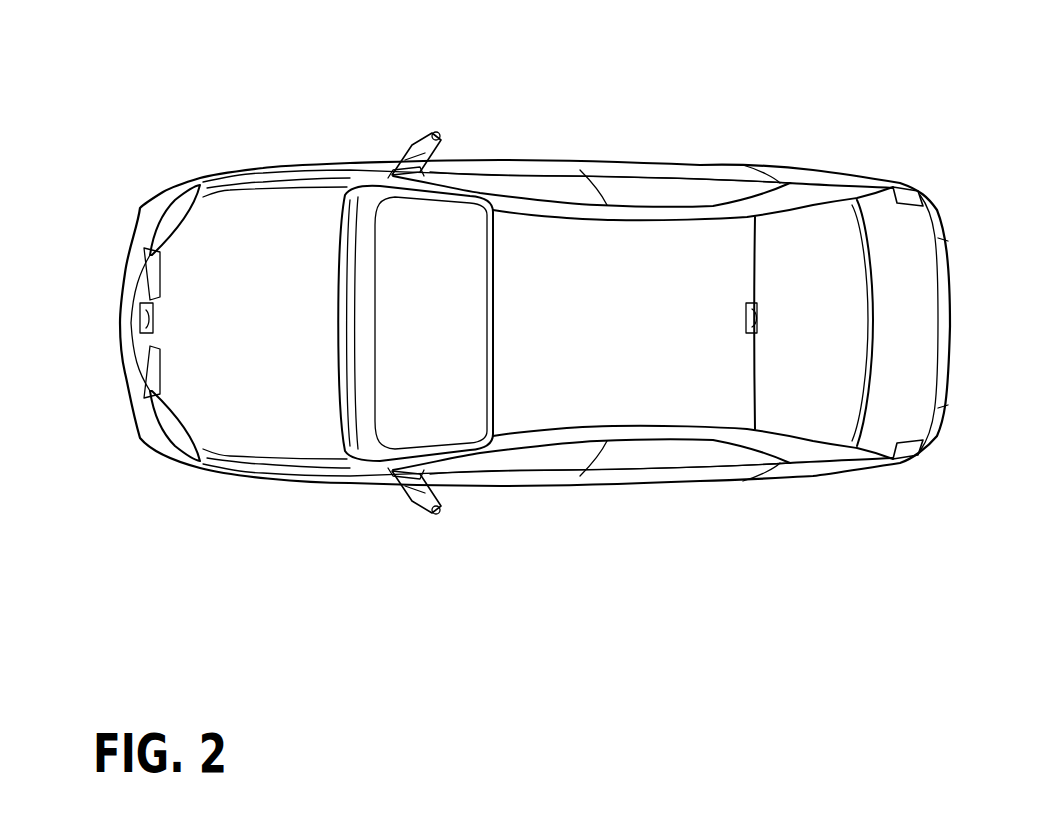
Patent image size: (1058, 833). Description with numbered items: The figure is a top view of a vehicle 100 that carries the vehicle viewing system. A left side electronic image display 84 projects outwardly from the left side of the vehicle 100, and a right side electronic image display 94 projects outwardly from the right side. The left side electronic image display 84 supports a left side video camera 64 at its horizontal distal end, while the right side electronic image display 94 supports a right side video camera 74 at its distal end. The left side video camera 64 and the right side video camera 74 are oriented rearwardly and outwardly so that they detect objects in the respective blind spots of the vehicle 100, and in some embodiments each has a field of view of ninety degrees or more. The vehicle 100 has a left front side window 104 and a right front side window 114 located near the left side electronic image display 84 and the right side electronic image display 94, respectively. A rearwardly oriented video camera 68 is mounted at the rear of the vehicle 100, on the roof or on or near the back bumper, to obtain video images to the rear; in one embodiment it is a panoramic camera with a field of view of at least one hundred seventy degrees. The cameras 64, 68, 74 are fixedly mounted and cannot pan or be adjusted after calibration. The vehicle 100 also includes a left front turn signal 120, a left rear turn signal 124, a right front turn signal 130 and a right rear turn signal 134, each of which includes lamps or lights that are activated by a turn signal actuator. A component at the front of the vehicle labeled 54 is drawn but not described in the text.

The vehicle 100 is at (636, 131).
The right front turn signal 130 is at (190, 188).
The left front turn signal 120 is at (192, 447).
The front sensor 54 is at (140, 318).
The right side electronic image display 94 is at (408, 149).
The right side video camera 74 is at (436, 130).
The left side electronic image display 84 is at (416, 498).
The left side video camera 64 is at (440, 512).
The right front side window 114 is at (505, 187).
The left front side window 104 is at (540, 453).
The right rear turn signal 134 is at (912, 196).
The left rear turn signal 124 is at (916, 455).
The rearwardly oriented video camera 68 is at (745, 316).